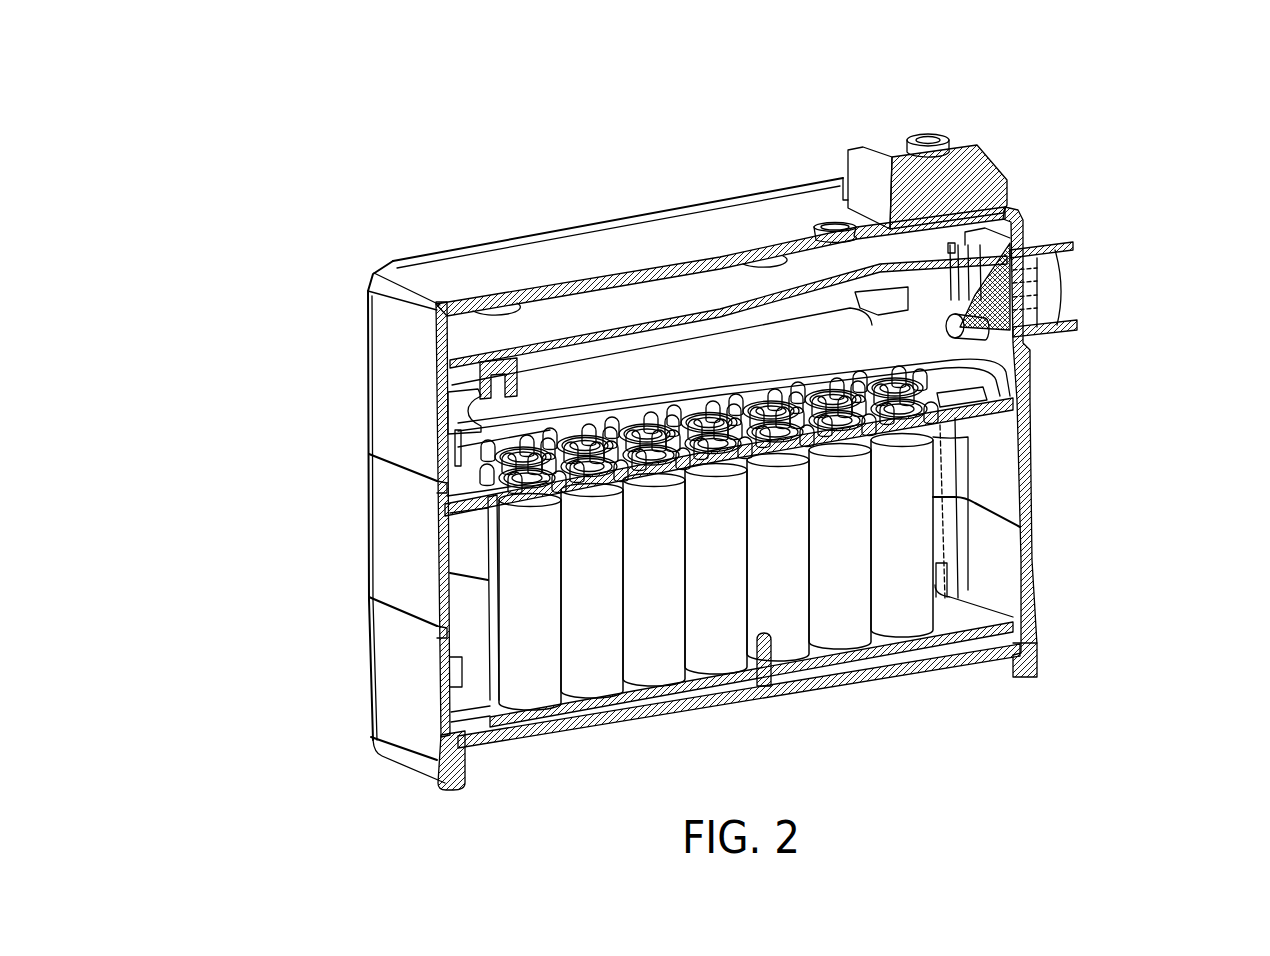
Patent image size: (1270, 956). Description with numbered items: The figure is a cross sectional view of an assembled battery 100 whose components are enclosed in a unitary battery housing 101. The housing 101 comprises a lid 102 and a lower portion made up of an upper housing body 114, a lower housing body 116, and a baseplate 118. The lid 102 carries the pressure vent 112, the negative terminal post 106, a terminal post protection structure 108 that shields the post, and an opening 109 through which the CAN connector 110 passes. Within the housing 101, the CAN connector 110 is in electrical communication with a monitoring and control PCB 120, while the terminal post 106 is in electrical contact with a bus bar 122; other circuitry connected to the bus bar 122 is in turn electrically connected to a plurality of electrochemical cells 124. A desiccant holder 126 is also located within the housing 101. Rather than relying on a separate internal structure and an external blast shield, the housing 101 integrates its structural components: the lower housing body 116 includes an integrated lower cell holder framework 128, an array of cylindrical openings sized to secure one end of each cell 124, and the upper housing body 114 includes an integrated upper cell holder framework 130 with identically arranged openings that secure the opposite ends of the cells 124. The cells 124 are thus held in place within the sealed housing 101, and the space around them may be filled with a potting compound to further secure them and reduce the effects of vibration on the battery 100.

The battery 100 is at (330, 112).
The battery housing 101 is at (366, 457).
The lid 102 is at (529, 256).
The negative terminal post 106 is at (929, 146).
The terminal post protection structure 108 is at (963, 193).
The opening 109 is at (1030, 352).
The CAN connector 110 is at (1045, 270).
The pressure vent 112 is at (835, 222).
The upper housing body 114 is at (394, 522).
The lower housing body 116 is at (412, 679).
The baseplate 118 is at (677, 713).
The monitoring and control PCB 120 is at (598, 303).
The bus bar 122 is at (570, 356).
The electrochemical cells 124 is at (897, 570).
The desiccant holder 126 is at (1023, 399).
The lower cell holder framework 128 is at (962, 614).
The upper cell holder framework 130 is at (473, 484).